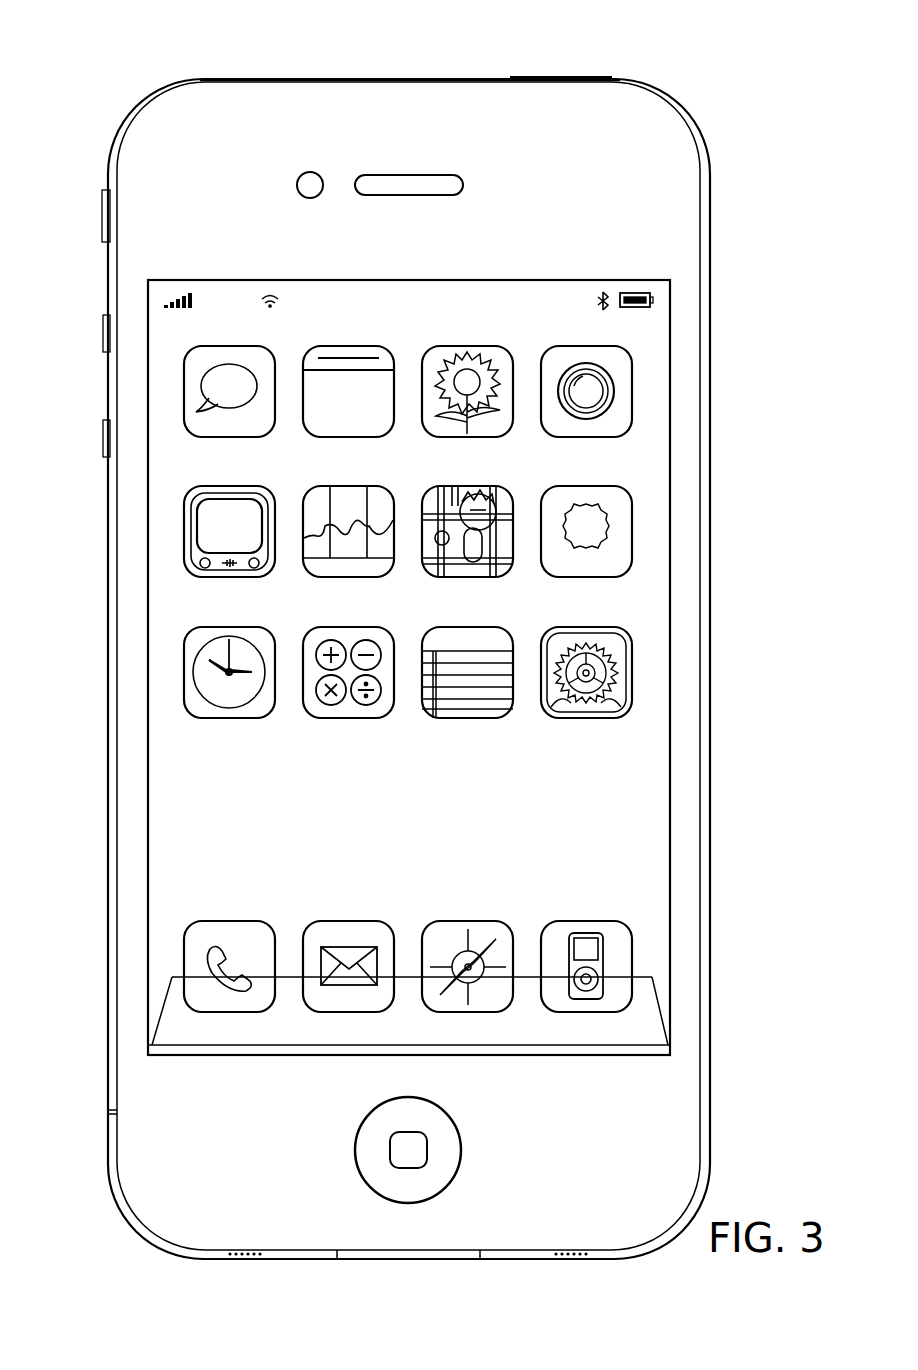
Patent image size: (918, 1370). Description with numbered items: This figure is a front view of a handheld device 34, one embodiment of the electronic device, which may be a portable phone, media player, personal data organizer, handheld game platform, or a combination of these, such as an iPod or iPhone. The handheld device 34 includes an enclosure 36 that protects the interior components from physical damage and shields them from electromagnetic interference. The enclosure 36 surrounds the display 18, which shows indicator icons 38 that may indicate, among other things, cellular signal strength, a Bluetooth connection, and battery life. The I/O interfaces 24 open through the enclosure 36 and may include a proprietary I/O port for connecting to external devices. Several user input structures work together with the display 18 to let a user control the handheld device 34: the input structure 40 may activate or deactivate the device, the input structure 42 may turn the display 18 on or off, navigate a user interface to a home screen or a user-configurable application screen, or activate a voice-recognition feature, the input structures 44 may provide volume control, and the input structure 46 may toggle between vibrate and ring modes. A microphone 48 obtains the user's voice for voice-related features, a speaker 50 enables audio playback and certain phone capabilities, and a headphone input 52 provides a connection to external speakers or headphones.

The handheld device 34 is at (188, 50).
The enclosure 36 is at (710, 272).
The display 18 is at (670, 635).
The indicator icons 38 is at (198, 293).
The input structure 40 is at (543, 77).
The input structure 42 is at (463, 1155).
The input structures 44 is at (103, 333).
The input structure 46 is at (102, 224).
The microphone 48 is at (240, 1262).
The speaker 50 is at (425, 175).
The headphone input 52 is at (274, 79).
The I/O interfaces 24 is at (392, 1260).